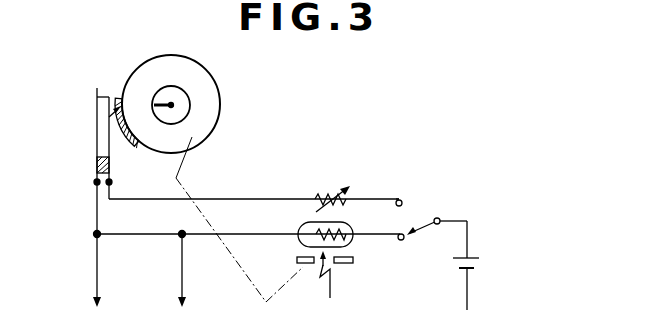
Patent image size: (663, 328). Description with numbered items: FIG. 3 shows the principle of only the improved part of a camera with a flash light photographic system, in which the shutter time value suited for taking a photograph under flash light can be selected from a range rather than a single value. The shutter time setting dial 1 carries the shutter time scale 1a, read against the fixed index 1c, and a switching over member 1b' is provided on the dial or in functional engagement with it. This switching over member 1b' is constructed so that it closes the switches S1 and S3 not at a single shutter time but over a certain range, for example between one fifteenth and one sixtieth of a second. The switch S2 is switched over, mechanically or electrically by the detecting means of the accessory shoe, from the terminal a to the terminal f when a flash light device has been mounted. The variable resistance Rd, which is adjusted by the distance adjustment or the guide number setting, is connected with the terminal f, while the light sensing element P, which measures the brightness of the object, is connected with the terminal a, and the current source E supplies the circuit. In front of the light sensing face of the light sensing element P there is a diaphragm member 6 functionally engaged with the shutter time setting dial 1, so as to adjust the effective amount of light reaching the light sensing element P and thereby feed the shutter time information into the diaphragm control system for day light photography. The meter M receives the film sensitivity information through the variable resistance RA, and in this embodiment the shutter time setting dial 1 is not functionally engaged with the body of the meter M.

The shutter time setting dial 1 is at (204, 108).
The shutter time scale 1a is at (148, 68).
The switching over member 1b' is at (129, 138).
The fixed index 1c is at (172, 104).
The diaphragm member 6 is at (343, 264).
The switch S1 is at (84, 139).
The switch S3 is at (97, 118).
The switch S2 is at (437, 235).
The variable resistance Rd is at (332, 194).
The light sensing element P is at (300, 230).
The current source E is at (473, 265).
The terminal f is at (396, 192).
The terminal a is at (397, 248).
The meter M is at (92, 165).
The variable resistance RA is at (178, 165).